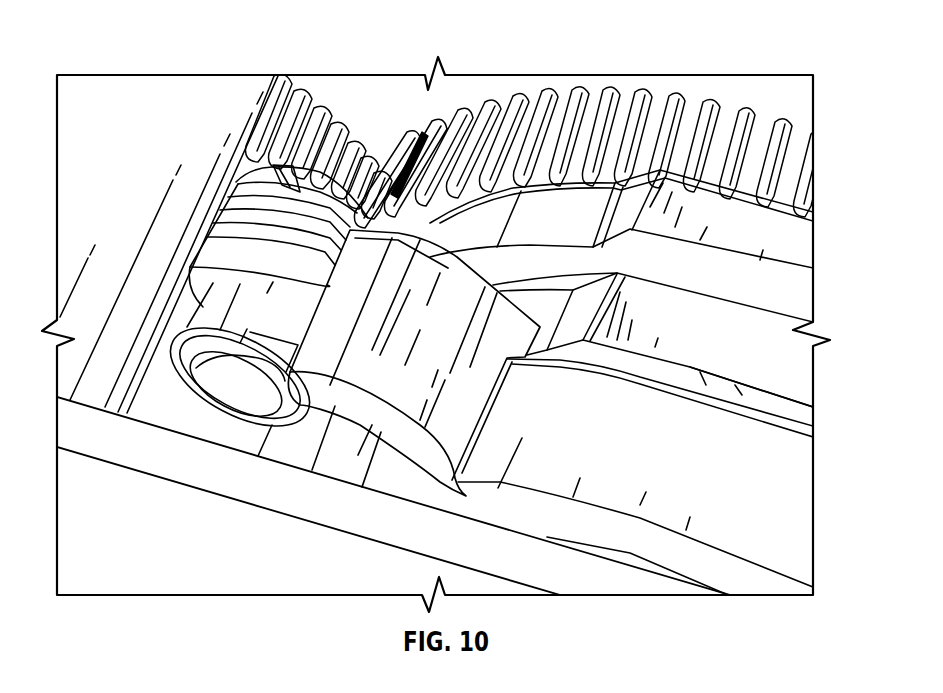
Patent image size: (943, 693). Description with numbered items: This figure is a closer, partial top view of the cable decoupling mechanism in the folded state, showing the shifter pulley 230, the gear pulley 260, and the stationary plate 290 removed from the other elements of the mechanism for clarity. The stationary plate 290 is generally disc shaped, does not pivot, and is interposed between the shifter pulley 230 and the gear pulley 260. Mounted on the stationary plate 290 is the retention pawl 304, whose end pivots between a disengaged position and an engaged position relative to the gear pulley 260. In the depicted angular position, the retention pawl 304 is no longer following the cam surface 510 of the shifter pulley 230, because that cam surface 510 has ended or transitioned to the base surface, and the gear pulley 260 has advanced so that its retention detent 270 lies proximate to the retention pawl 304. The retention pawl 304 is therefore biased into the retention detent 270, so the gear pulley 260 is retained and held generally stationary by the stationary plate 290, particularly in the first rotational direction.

The retention pawl 304 is at (472, 397).
The stationary plate 290 is at (617, 373).
The shifter pulley 230 is at (668, 331).
The cam surface 510 is at (730, 357).
The gear pulley 260 is at (793, 498).
The retention detent 270 is at (403, 483).